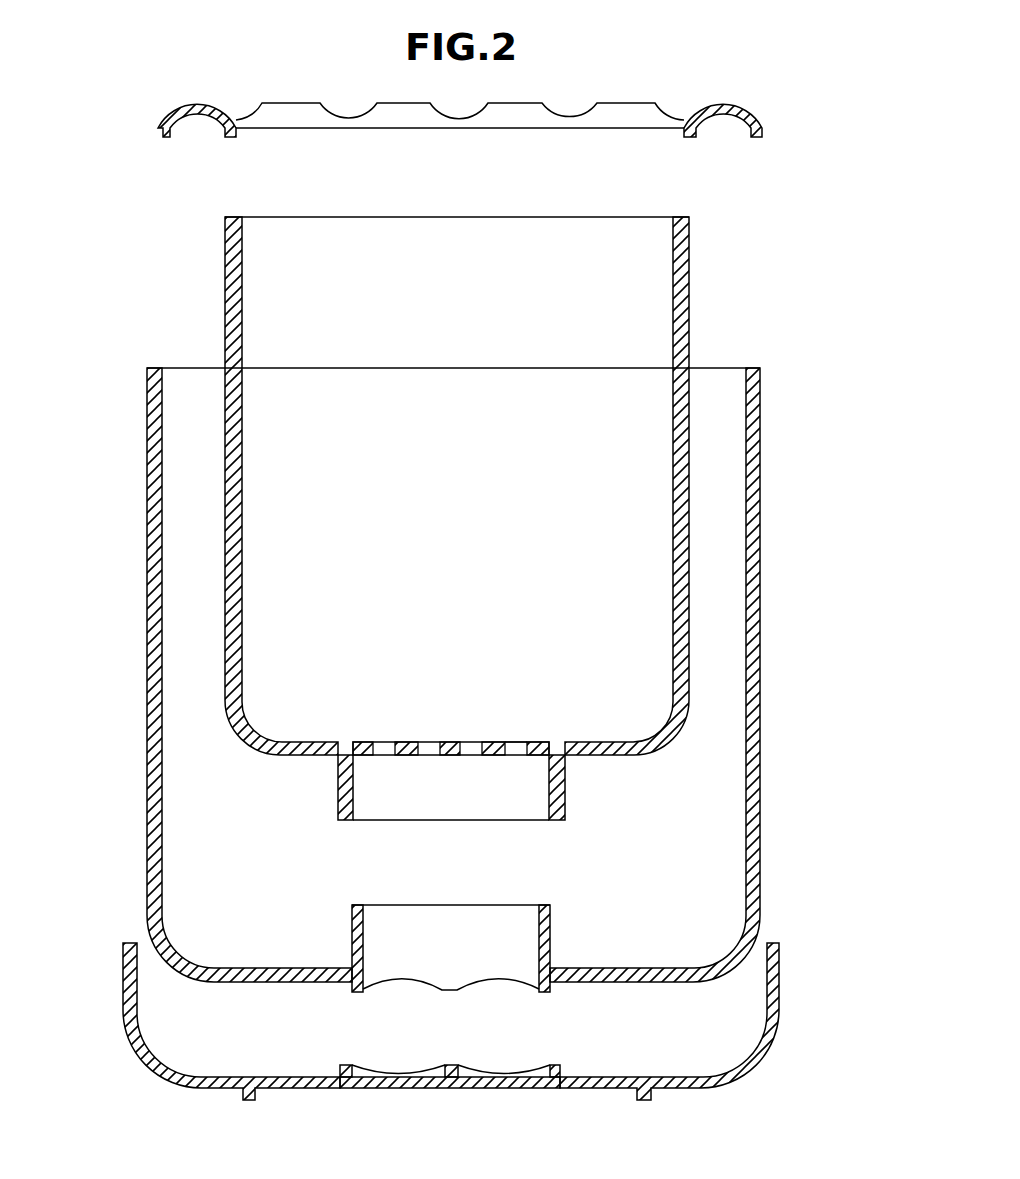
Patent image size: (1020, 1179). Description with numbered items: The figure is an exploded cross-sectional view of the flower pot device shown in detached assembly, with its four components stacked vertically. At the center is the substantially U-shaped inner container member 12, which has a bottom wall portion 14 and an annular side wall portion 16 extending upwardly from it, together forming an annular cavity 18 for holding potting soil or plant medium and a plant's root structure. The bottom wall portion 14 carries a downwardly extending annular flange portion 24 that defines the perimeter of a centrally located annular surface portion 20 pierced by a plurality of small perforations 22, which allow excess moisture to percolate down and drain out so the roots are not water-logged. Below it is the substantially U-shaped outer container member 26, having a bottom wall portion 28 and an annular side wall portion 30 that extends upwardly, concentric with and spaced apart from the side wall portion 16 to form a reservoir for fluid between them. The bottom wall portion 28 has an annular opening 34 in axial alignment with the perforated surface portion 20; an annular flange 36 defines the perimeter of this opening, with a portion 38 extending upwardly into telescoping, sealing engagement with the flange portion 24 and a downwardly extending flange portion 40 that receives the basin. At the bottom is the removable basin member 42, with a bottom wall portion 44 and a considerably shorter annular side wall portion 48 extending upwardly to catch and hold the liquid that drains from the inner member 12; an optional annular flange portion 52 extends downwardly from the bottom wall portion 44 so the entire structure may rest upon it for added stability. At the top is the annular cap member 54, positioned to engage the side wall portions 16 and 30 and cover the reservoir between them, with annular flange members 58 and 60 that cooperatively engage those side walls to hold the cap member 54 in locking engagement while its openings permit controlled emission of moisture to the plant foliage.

The inner container member 12 is at (475, 503).
The bottom wall portion 14 is at (462, 751).
The annular side wall portion 16 is at (232, 277).
The annular cavity 18 is at (513, 246).
The annular surface portion 20 is at (358, 742).
The perforations 22 is at (520, 742).
The annular flange portion 24 is at (338, 792).
The outer container member 26 is at (471, 701).
The bottom wall portion 28 is at (628, 984).
The annular side wall portion 30 is at (152, 566).
The annular opening 34 is at (442, 967).
The annular flange 36 is at (348, 932).
The flange portion 38 is at (546, 926).
The downwardly extending flange portion 40 is at (365, 988).
The basin member 42 is at (439, 1044).
The bottom wall portion 44 is at (515, 1088).
The annular side wall portion 48 is at (125, 985).
The annular flange portion 52 is at (652, 1097).
The annular cap member 54 is at (431, 110).
The annular flange member 58 is at (160, 140).
The annular flange member 60 is at (236, 136).